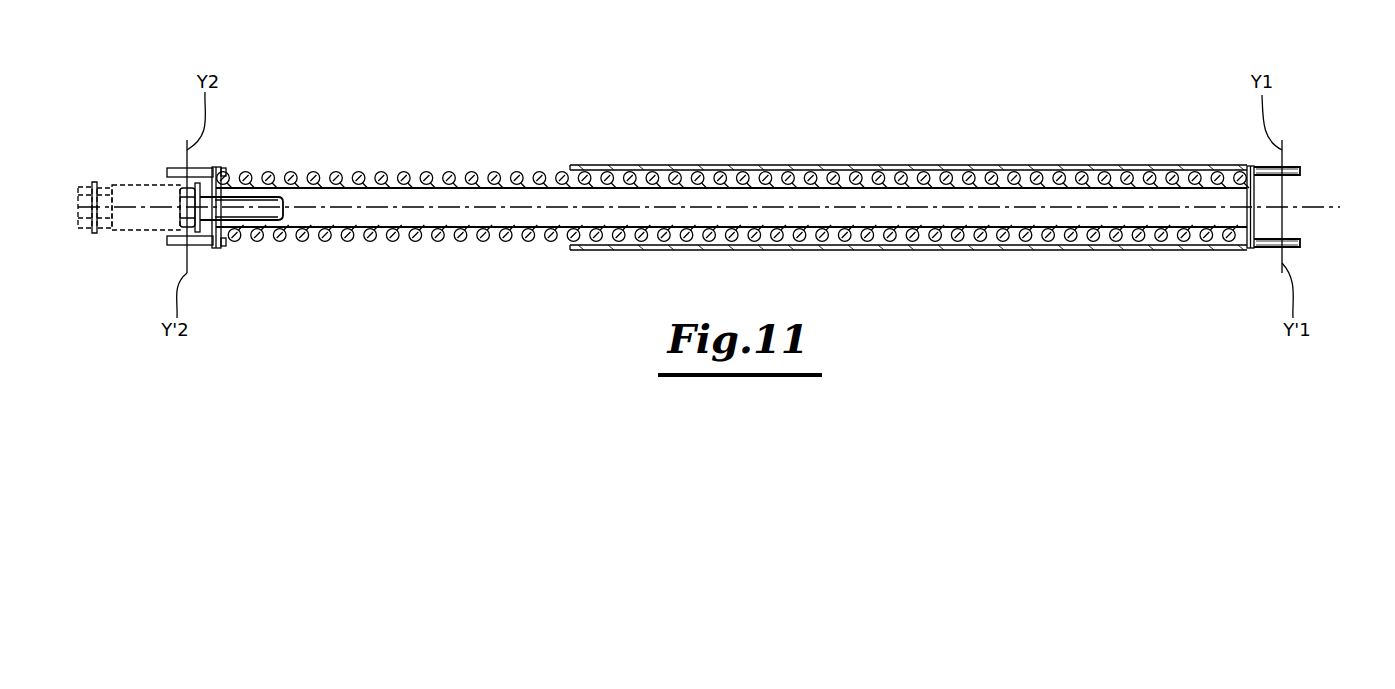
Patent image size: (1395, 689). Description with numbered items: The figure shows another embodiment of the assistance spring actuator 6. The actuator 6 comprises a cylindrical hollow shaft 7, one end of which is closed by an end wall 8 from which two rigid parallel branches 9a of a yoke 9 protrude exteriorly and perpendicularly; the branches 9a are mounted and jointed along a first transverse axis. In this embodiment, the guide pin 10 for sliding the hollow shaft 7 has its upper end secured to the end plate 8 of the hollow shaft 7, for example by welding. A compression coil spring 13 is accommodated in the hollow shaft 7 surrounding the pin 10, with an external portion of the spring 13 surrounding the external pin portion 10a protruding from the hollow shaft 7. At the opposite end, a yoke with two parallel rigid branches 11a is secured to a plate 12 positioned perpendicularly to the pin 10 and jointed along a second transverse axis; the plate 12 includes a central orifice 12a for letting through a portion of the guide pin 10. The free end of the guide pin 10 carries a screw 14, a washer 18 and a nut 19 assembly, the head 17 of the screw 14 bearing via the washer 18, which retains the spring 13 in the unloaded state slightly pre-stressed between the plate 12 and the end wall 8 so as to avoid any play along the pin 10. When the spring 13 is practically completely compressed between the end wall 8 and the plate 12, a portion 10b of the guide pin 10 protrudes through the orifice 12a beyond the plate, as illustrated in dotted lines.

The assistance spring actuator 6 is at (866, 150).
The cylindrical hollow shaft 7 is at (1070, 164).
The end wall 8 is at (1251, 250).
The yoke 9 is at (1266, 164).
The branches 9a is at (1296, 172).
The guide pin 10 is at (789, 185).
The external pin portion 10a is at (397, 243).
The portion of the guide pin 10b is at (132, 231).
The branches 11a is at (175, 168).
The plate 12 is at (218, 249).
The central orifice 12a is at (233, 168).
The spring 13 is at (453, 170).
The screw 14 is at (179, 207).
The head 17 is at (83, 186).
The washer 18 is at (95, 181).
The nut 19 is at (116, 187).